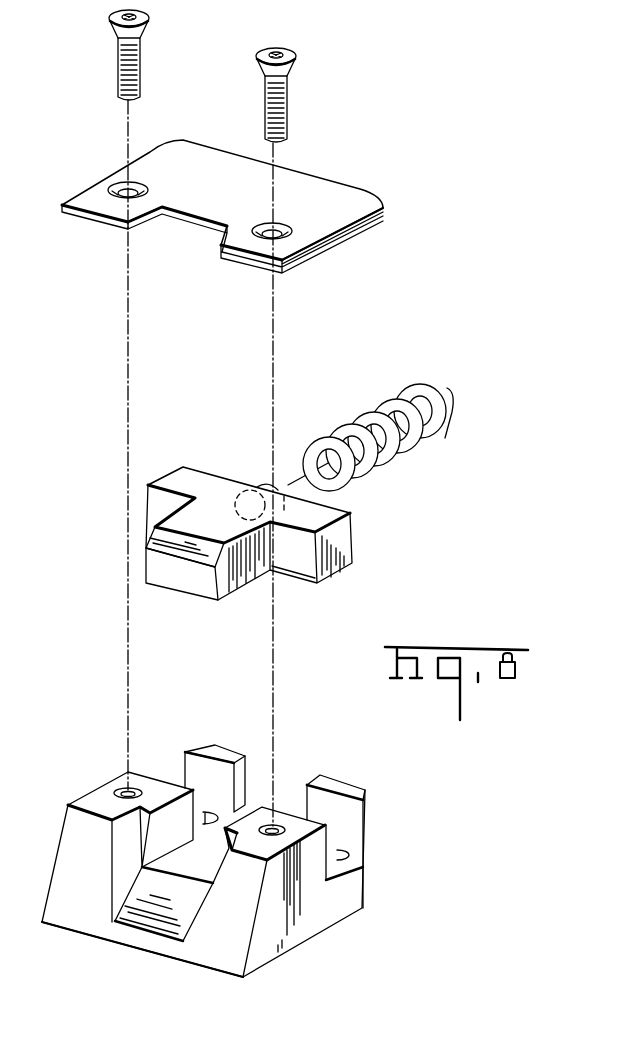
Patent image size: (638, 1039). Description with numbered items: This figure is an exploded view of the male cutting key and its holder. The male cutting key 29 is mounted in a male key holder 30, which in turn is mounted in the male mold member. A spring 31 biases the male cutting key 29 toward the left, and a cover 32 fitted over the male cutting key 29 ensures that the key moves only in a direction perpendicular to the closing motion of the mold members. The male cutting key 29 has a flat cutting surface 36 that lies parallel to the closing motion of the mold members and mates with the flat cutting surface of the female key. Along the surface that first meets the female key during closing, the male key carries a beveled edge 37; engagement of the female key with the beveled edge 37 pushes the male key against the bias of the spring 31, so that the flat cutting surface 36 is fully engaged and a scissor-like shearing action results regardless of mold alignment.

The male cutting key 29 is at (211, 556).
The male key holder 30 is at (330, 918).
The spring 31 is at (418, 442).
The cover 32 is at (357, 190).
The flat cutting surface 36 is at (182, 590).
The beveled edge 37 is at (155, 528).